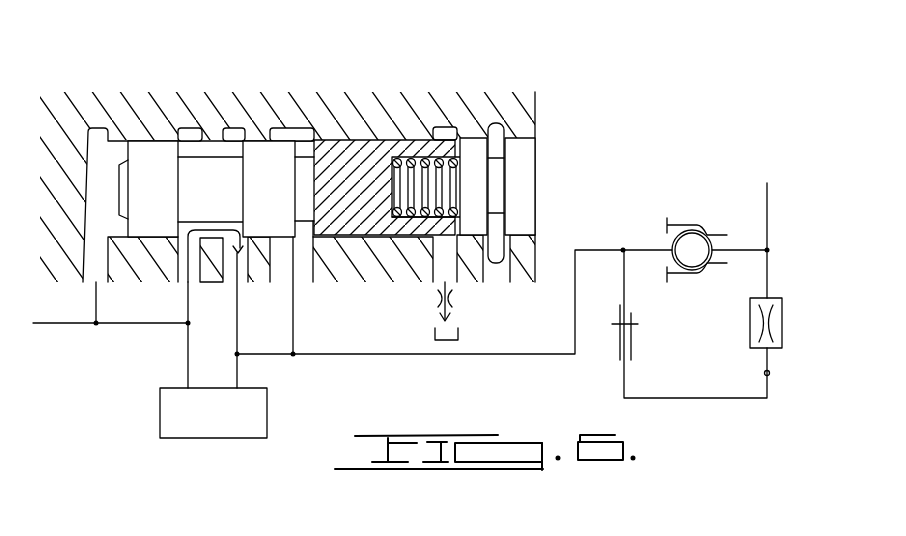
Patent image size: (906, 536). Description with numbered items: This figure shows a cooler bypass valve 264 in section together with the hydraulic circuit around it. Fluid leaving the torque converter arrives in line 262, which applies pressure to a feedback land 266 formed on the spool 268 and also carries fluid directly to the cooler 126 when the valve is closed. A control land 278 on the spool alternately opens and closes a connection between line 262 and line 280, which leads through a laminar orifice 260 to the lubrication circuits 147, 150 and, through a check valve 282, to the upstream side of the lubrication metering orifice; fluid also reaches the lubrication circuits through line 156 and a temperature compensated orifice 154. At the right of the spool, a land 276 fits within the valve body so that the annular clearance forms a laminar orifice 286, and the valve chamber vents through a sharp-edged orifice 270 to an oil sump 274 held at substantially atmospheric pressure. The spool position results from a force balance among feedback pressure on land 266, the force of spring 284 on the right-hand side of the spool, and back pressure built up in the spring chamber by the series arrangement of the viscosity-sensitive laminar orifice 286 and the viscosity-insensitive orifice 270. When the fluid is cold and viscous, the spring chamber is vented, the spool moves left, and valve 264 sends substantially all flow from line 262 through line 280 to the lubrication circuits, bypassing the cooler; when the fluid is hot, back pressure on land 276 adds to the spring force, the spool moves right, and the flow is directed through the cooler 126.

The cooler bypass valve 264 is at (474, 88).
The feedback land 266 is at (144, 157).
The spool 268 is at (211, 168).
The control land 278 is at (280, 157).
The land 276 is at (356, 167).
The laminar orifice 286 is at (400, 142).
The spring 284 is at (427, 216).
The line 262 is at (53, 323).
The cooler 126 is at (170, 439).
The line 280 is at (420, 354).
The sharp-edged orifice 270 is at (453, 293).
The oil sump 274 is at (433, 333).
The check valve 282 is at (695, 240).
The line 156 is at (768, 198).
The temperature compensated orifice 154 is at (783, 318).
The lubrication circuit 147 is at (770, 373).
The lubrication circuit 150 is at (829, 385).
The laminar orifice 260 is at (632, 349).